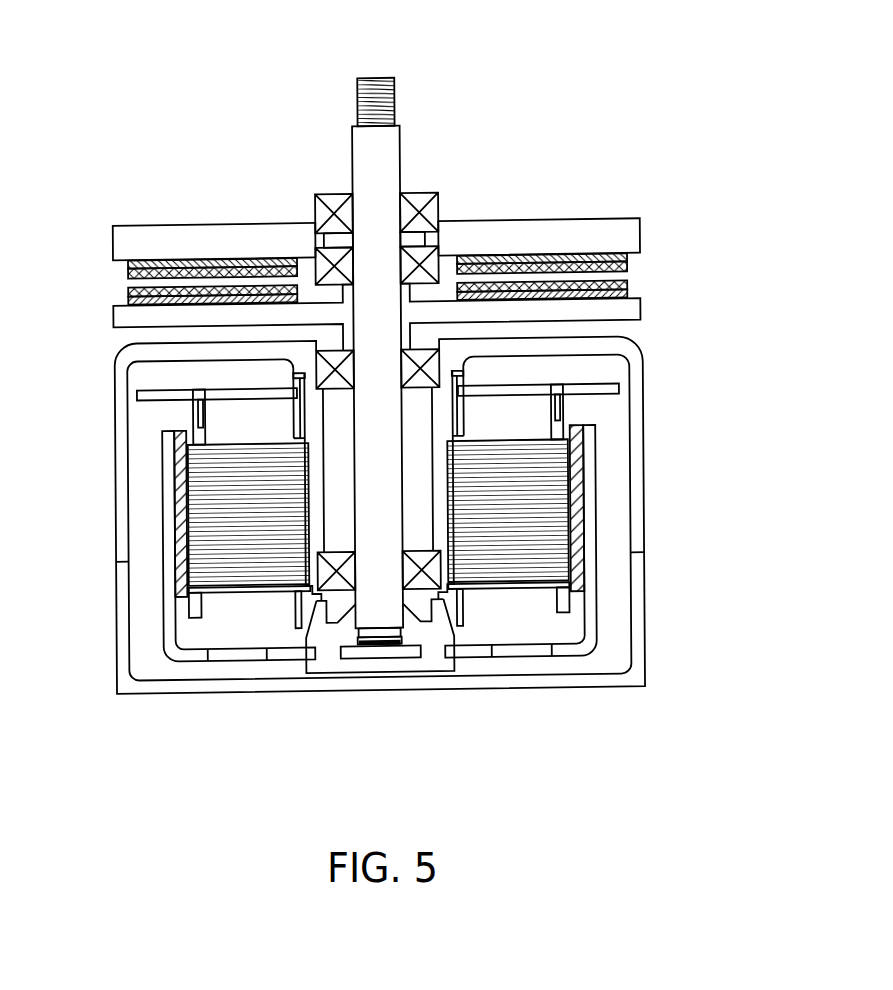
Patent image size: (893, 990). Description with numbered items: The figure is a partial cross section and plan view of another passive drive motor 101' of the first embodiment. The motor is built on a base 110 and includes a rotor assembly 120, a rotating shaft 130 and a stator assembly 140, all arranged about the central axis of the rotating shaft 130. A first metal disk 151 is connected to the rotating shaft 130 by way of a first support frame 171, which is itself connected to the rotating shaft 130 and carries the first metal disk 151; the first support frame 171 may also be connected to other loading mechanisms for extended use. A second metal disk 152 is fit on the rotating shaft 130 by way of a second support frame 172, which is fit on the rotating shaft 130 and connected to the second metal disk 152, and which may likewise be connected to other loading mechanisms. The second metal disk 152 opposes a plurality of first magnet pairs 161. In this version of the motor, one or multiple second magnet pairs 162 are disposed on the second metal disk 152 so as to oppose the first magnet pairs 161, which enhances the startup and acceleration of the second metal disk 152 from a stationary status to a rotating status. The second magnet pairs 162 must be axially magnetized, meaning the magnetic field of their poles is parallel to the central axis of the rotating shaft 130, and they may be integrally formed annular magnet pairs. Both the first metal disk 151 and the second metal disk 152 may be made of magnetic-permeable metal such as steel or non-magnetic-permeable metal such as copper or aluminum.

The passive drive motor 101' is at (378, 388).
The base 110 is at (287, 686).
The rotor assembly 120 is at (176, 658).
The rotating shaft 130 is at (396, 615).
The stator assembly 140 is at (510, 590).
The first metal disk 151 is at (634, 297).
The second metal disk 152 is at (628, 262).
The first magnet pairs 161 is at (628, 288).
The second magnet pairs 162 is at (124, 269).
The first support frame 171 is at (639, 311).
The second support frame 172 is at (634, 237).